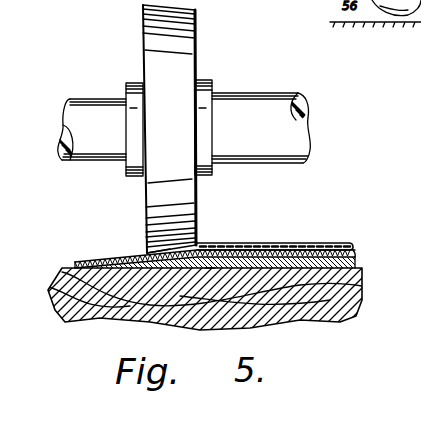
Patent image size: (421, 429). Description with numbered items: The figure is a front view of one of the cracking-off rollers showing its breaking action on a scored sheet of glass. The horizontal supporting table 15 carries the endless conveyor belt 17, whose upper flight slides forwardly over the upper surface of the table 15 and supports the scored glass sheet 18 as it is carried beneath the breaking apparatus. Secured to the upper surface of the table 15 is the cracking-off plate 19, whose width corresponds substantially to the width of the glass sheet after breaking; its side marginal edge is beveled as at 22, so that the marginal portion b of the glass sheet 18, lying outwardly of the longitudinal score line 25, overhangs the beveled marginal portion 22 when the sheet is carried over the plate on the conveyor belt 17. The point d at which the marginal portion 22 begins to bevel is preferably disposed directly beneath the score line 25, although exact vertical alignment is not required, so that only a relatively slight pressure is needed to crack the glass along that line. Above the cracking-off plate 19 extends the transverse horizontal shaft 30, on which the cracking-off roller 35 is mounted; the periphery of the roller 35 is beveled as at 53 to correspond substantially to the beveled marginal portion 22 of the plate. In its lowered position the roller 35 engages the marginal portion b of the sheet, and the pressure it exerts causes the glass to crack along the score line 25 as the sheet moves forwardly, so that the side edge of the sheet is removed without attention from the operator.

The supporting table 15 is at (75, 305).
The endless conveyor belt 17 is at (92, 262).
The glass sheet 18 is at (335, 243).
The cracking-off plate 19 is at (356, 258).
The beveled marginal portion 22 is at (210, 272).
The score line 25 is at (203, 248).
The shaft 30 is at (262, 108).
The cracking-off roller 35 is at (194, 47).
The beveled periphery 53 is at (153, 68).
The marginal portion of the glass sheet b is at (170, 242).
The bevel starting point d is at (211, 270).